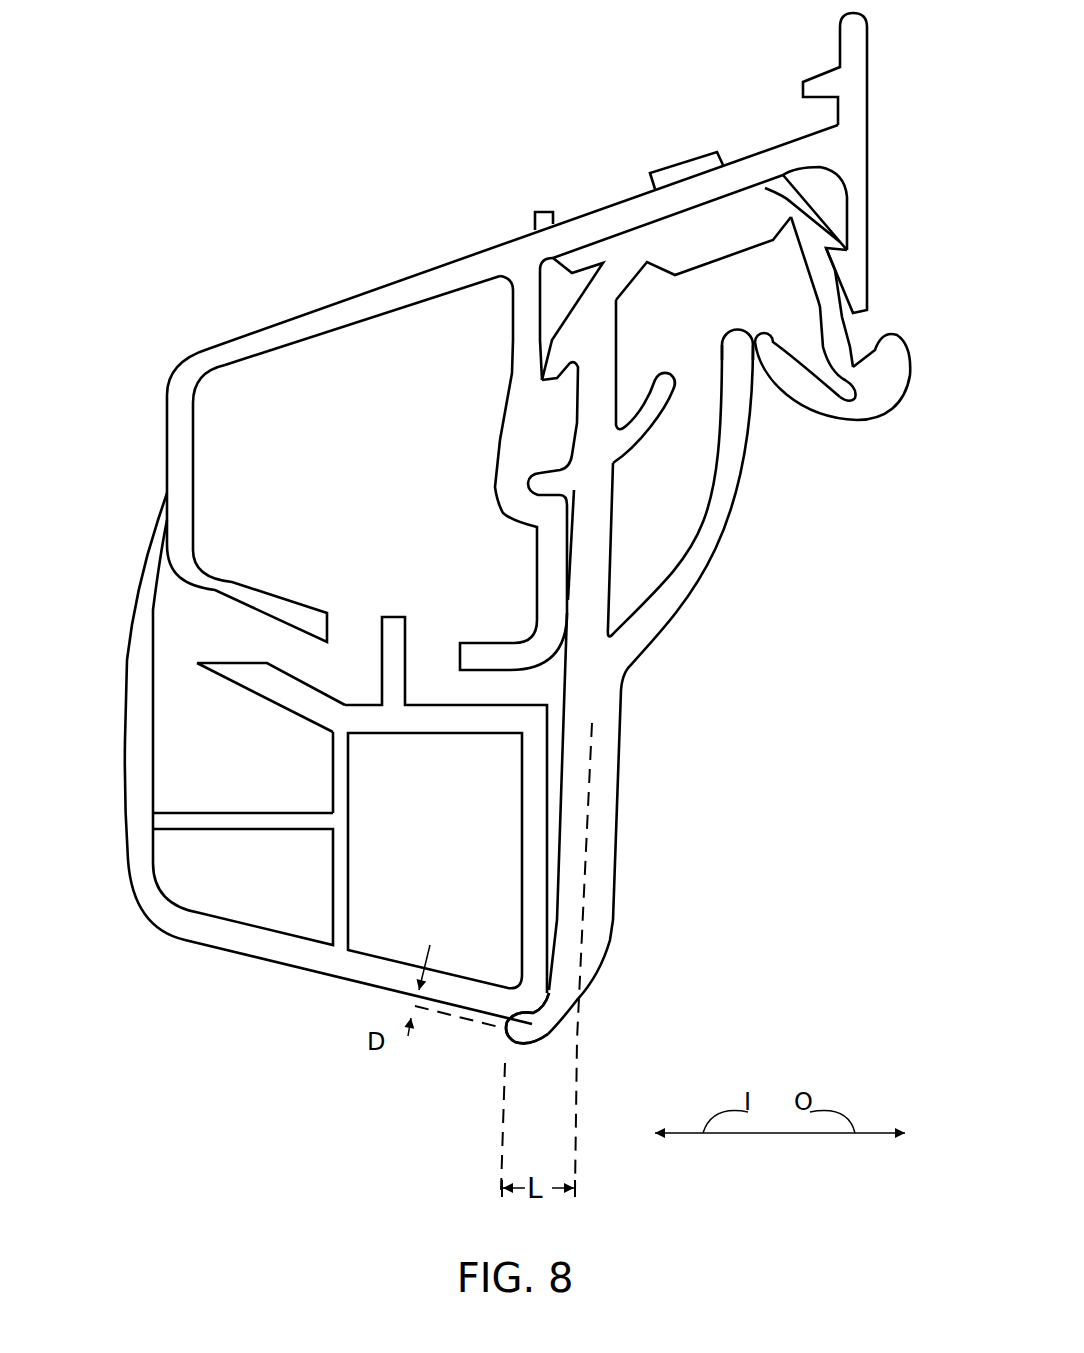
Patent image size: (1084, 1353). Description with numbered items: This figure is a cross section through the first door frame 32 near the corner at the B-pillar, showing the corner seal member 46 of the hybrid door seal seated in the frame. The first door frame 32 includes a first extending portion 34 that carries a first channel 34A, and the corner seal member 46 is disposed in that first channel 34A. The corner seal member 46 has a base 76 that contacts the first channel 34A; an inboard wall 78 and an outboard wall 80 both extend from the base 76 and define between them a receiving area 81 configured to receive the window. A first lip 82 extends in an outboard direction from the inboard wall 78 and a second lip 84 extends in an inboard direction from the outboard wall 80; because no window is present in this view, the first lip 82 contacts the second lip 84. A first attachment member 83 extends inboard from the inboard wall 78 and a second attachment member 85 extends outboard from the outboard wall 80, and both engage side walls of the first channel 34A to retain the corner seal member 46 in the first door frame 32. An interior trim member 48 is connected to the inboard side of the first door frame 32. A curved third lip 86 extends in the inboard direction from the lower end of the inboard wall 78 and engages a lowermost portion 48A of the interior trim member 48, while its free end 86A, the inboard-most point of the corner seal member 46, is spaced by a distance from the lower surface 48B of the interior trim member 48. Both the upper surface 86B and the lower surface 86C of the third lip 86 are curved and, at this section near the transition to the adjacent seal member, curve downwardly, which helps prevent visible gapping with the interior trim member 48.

The first door frame 32 is at (333, 300).
The first extending portion 34 is at (600, 206).
The first channel 34A is at (765, 188).
The second attachment member 85 is at (830, 232).
The base 76 is at (717, 260).
The outboard wall 80 is at (845, 331).
The second lip 84 is at (836, 422).
The receiving area 81 is at (773, 407).
The first lip 82 is at (690, 589).
The first attachment member 83 is at (552, 468).
The inboard wall 78 is at (621, 780).
The corner seal member 46 is at (620, 890).
The interior trim member 48 is at (125, 745).
The lowermost portion 48A is at (550, 1030).
The lower surface 48B is at (293, 967).
The third lip 86 is at (532, 1046).
The free end 86A is at (507, 1040).
The upper surface 86B is at (500, 995).
The lower surface 86C is at (547, 1042).